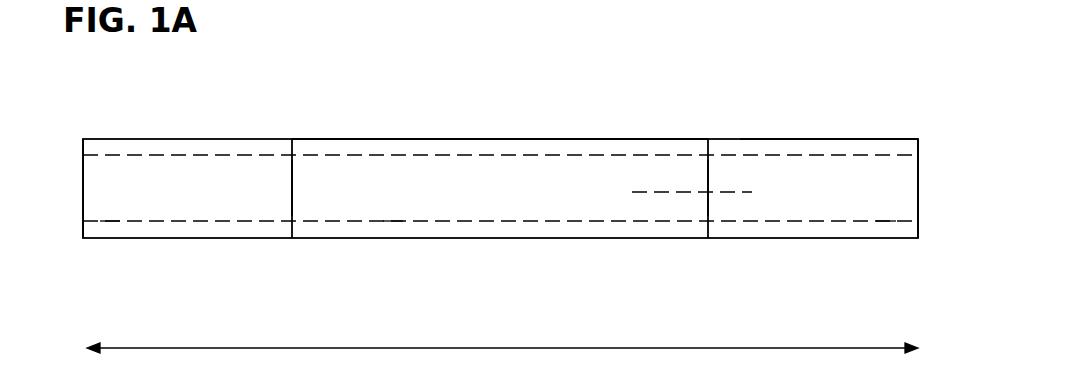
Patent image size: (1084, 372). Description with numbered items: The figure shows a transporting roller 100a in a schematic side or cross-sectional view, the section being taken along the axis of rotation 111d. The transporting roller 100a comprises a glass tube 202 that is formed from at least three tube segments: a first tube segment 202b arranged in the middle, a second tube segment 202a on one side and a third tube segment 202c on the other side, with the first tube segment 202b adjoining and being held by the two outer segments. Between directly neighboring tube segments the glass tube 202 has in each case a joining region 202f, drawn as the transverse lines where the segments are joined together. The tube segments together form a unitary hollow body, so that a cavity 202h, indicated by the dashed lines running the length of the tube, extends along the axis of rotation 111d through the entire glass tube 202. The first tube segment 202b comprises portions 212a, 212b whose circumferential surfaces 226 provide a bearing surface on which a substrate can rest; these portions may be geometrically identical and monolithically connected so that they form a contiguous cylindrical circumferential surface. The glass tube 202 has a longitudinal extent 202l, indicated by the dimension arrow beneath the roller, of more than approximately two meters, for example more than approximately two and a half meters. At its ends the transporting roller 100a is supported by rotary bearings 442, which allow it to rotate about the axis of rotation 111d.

The transporting roller 100a is at (828, 75).
The glass tube 202 is at (483, 135).
The second tube segment 202a is at (222, 188).
The first tube segment 202b is at (500, 175).
The third tube segment 202c is at (778, 188).
The joining region 202f is at (292, 240).
The cavity 202h is at (111, 198).
The longitudinal extent 202l is at (463, 343).
The portion 212a is at (348, 140).
The portion 212b is at (595, 140).
The circumferential surface 226 is at (412, 103).
The rotary bearing 442 is at (98, 135).
The axis of rotation 111d is at (647, 193).